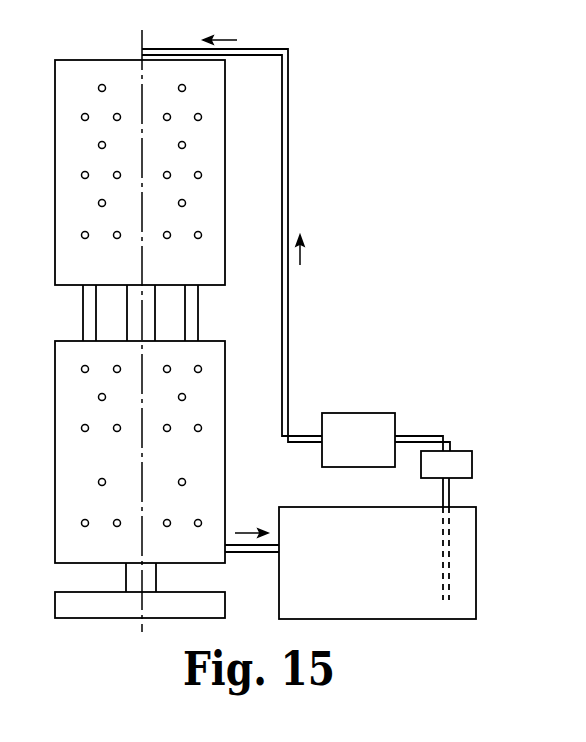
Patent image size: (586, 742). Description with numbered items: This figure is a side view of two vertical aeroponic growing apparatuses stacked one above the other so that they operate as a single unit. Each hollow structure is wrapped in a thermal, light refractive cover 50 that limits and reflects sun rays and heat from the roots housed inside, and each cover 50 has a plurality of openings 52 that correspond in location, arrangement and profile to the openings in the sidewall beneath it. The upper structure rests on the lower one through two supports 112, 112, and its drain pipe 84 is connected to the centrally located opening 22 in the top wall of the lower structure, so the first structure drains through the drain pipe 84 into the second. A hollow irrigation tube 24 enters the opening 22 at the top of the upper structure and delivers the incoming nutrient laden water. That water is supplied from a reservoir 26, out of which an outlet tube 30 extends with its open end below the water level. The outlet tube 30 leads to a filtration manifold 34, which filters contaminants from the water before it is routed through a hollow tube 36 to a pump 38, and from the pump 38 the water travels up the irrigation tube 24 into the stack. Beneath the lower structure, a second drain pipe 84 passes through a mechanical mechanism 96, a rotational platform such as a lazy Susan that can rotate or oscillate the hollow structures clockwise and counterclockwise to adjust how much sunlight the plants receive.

The opening 22 is at (138, 55).
The irrigation tube 24 is at (270, 48).
The reservoir 26 is at (472, 546).
The outlet tube 30 is at (450, 490).
The filtration manifold 34 is at (470, 462).
The hollow tube 36 is at (423, 436).
The pump 38 is at (356, 415).
The thermal, light refractive cover 50 is at (224, 187).
The openings 52 is at (186, 89).
The drain pipe 84 is at (153, 327).
The mechanical mechanism 96 is at (218, 605).
The supports 112 is at (80, 313).